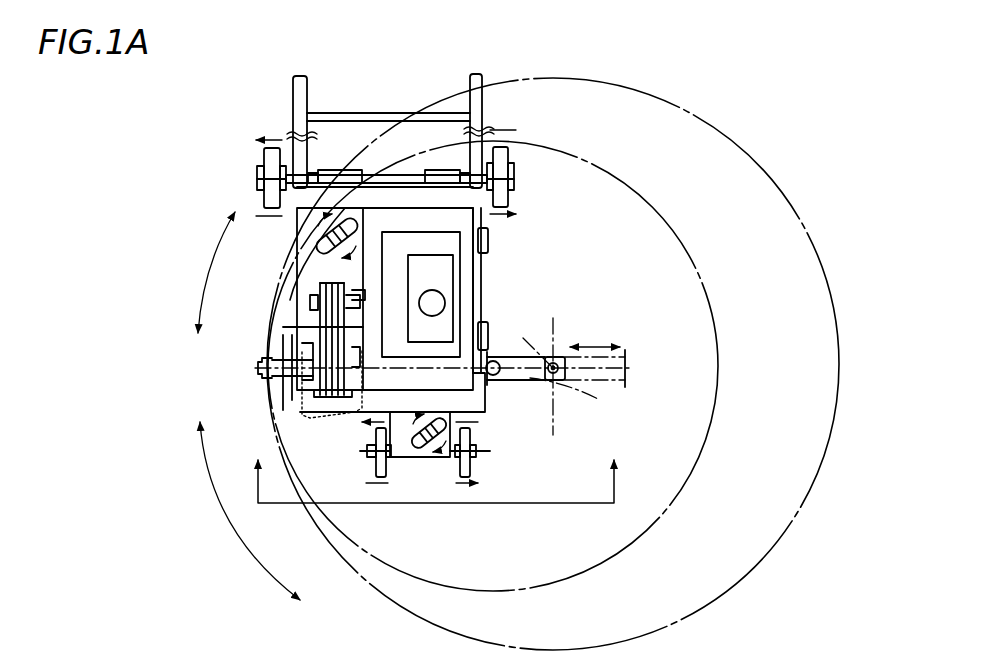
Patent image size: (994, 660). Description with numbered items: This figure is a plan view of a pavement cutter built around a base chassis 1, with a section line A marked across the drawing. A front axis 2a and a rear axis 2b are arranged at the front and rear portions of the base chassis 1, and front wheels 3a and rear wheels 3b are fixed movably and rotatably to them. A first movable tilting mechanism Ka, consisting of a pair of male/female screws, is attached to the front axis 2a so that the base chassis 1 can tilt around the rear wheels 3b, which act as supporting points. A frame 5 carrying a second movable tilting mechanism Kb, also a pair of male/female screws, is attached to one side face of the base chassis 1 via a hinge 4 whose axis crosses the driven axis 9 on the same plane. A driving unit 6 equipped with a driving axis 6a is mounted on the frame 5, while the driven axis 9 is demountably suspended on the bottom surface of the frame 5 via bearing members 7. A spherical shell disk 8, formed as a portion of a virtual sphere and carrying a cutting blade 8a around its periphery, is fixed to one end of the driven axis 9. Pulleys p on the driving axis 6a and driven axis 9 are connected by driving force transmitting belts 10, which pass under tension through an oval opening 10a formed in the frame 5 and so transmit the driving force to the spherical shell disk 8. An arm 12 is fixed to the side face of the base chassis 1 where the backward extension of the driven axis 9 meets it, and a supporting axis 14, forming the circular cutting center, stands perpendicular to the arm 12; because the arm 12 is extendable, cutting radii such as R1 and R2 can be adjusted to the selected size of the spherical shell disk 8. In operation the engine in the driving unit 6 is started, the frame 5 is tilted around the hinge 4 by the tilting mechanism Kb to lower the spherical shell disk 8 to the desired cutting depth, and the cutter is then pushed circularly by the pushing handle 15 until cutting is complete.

The base chassis 1 is at (420, 456).
The front axis 2a is at (368, 452).
The rear axis 2b is at (260, 172).
The front wheels 3a is at (372, 478).
The rear wheels 3b is at (262, 198).
The hinge 4 is at (488, 250).
The frame 5 is at (483, 390).
The driving unit 6 is at (478, 410).
The driving axis 6a is at (360, 296).
The bearing members 7 is at (306, 416).
The spherical shell disk 8 is at (282, 392).
The cutting blade 8a is at (291, 300).
The driven axis 9 is at (283, 386).
The driving force transmitting belts 10 is at (330, 332).
The oval opening 10a is at (348, 322).
The arm 12 is at (585, 388).
The supporting axis 14 is at (548, 362).
The pushing handle 15 is at (297, 78).
The first movable tilting mechanism Ka is at (413, 448).
The second movable tilting mechanism Kb is at (318, 246).
The pulleys p is at (318, 350).
The cutting radius R1 is at (712, 286).
The cutting radius R2 is at (834, 339).
The section line A is at (436, 478).